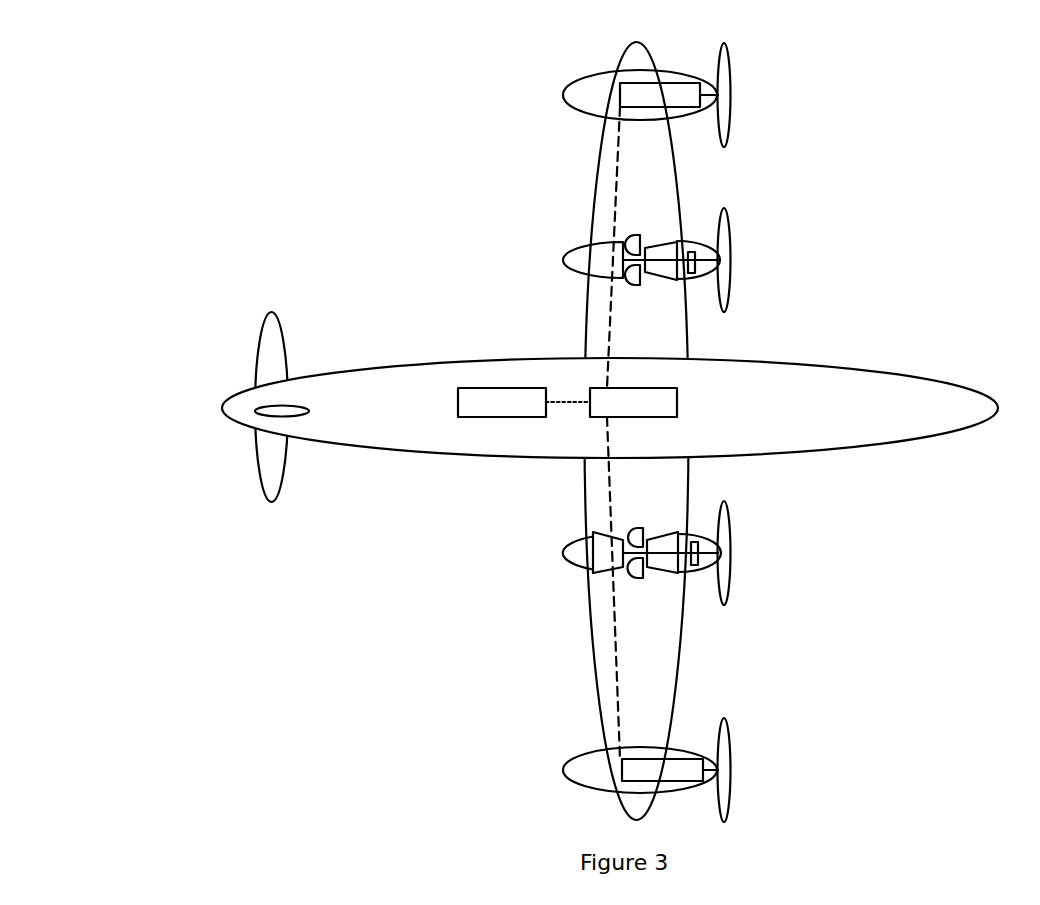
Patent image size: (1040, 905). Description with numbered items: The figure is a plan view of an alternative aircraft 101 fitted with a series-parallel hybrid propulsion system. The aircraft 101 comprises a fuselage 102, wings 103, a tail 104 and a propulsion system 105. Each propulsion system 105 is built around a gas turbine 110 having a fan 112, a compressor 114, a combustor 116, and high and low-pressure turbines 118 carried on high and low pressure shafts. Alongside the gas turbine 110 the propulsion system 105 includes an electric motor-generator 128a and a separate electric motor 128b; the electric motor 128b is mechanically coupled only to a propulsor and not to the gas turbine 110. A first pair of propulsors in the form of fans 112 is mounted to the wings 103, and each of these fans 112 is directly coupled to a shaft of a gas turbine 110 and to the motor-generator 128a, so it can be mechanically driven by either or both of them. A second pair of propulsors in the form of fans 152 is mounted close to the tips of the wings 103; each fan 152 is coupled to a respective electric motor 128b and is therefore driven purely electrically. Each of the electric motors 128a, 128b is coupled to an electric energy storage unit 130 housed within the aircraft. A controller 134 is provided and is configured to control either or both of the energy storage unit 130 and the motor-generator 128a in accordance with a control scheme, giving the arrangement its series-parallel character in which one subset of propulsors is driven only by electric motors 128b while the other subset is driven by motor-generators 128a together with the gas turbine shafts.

The aircraft 101 is at (521, 421).
The fuselage 102 is at (430, 355).
The wings 103 is at (598, 606).
The tail 104 is at (256, 474).
The propulsion system 105 is at (556, 182).
The gas turbine 110 is at (588, 286).
The fan 112 is at (726, 212).
The compressor 114 is at (667, 577).
The combustor 116 is at (643, 578).
The high and low-pressure turbines 118 is at (607, 575).
The electric motor-generator 128a is at (691, 251).
The electric motor 128b is at (660, 83).
The electric energy storage unit 130 is at (678, 395).
The controller 134 is at (502, 418).
The fans 152 is at (681, 421).